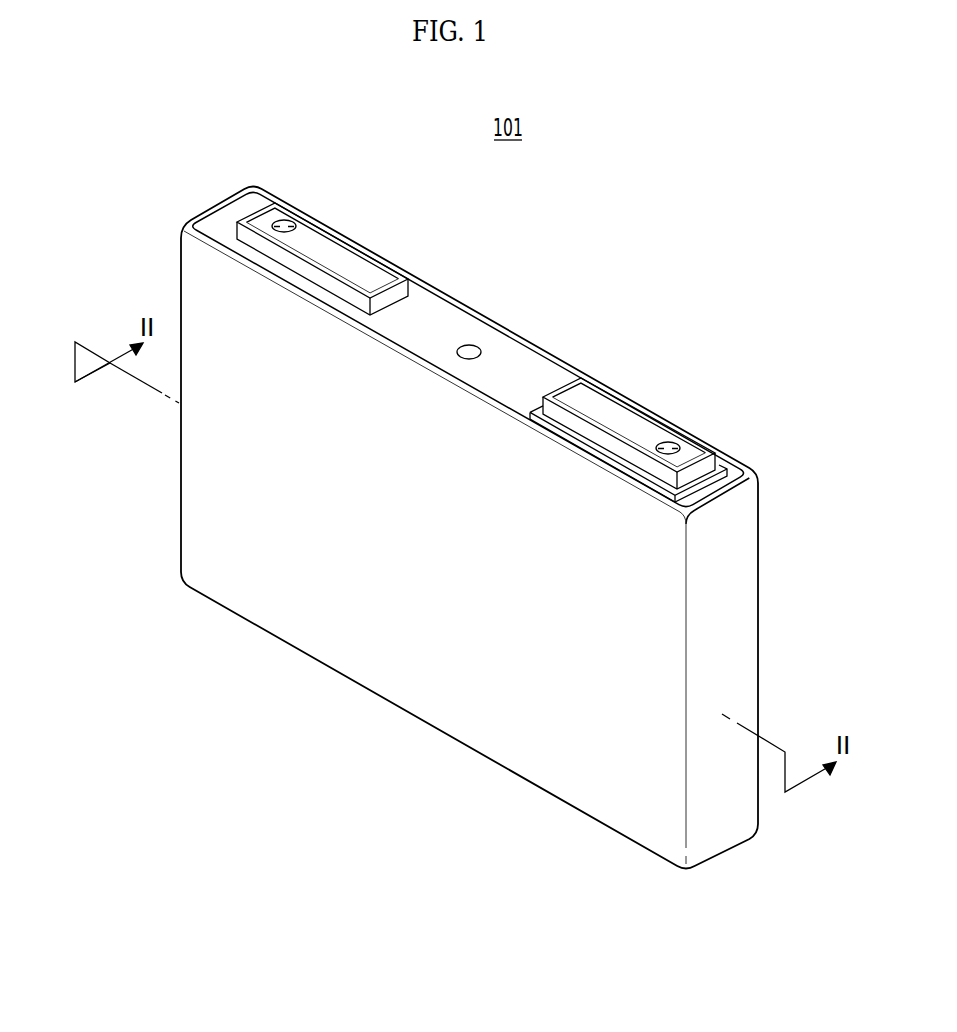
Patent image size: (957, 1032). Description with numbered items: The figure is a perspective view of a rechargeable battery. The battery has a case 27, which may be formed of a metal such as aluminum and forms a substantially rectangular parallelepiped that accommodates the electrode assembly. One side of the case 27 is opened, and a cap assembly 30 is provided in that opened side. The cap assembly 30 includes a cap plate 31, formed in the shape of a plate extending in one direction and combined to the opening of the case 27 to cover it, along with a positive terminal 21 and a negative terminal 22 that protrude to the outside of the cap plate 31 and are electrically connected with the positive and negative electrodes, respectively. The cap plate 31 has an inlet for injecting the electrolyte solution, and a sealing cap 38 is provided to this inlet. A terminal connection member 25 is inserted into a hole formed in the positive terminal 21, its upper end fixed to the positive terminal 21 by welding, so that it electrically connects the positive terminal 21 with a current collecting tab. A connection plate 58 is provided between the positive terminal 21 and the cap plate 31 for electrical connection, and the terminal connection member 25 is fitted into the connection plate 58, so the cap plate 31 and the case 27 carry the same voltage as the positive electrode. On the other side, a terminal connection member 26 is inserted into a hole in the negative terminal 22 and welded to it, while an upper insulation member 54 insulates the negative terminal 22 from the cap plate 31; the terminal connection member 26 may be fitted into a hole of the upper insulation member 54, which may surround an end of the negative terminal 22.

The positive terminal 21 is at (643, 420).
The negative terminal 22 is at (322, 224).
The terminal connection member 25 is at (668, 444).
The terminal connection member 26 is at (285, 221).
The case 27 is at (402, 684).
The cap assembly 30 is at (489, 320).
The cap plate 31 is at (428, 310).
The sealing cap 38 is at (474, 347).
The upper insulation member 54 is at (239, 228).
The connection plate 58 is at (722, 458).